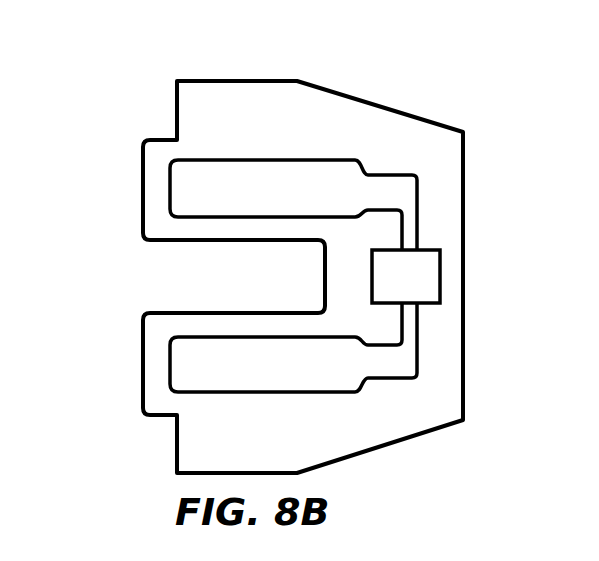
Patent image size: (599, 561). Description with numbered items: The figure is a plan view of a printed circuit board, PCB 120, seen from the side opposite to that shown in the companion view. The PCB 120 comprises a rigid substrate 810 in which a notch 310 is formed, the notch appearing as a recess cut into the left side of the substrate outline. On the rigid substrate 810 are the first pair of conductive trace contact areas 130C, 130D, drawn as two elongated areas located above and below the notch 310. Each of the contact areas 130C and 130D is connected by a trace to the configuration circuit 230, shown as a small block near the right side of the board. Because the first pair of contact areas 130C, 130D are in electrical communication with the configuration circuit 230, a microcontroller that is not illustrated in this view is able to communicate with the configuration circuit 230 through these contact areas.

The PCB 120 is at (276, 253).
The notch 310 is at (259, 277).
The rigid substrate 810 is at (322, 133).
The conductive trace contact area 130C is at (283, 198).
The conductive trace contact area 130D is at (284, 375).
The configuration circuit 230 is at (428, 285).